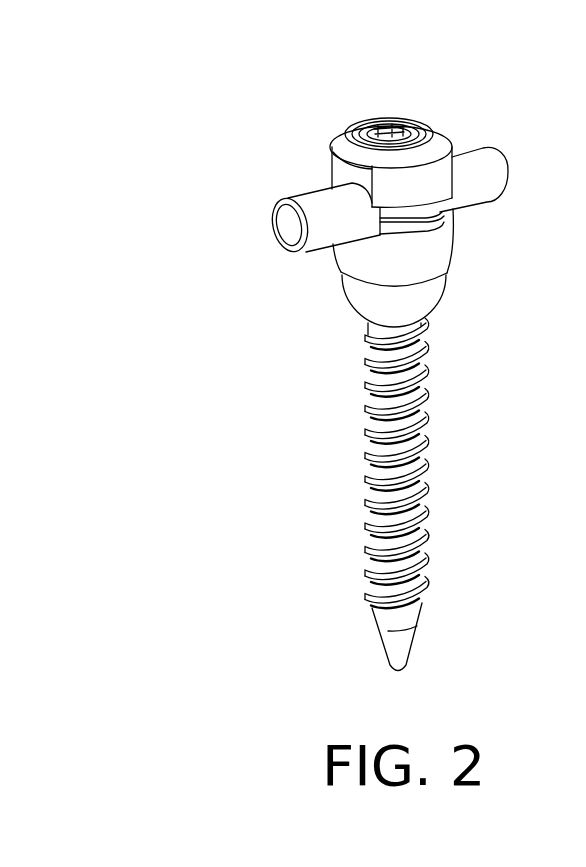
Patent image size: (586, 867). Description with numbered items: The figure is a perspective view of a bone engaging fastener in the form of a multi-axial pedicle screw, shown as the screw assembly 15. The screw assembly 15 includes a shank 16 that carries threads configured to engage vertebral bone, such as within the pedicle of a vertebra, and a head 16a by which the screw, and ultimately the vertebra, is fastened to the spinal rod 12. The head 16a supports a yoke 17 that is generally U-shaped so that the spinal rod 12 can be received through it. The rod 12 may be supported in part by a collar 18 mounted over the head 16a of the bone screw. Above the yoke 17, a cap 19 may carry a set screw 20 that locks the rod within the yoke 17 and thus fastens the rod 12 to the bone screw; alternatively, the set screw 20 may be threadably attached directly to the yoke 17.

The spinal rod 12 is at (325, 198).
The bone engaging fastener or screw assembly 15 is at (415, 473).
The shank 16 is at (427, 418).
The head 16a is at (424, 302).
The yoke 17 is at (427, 210).
The collar 18 is at (432, 255).
The cap 19 is at (442, 131).
The set screw 20 is at (363, 119).